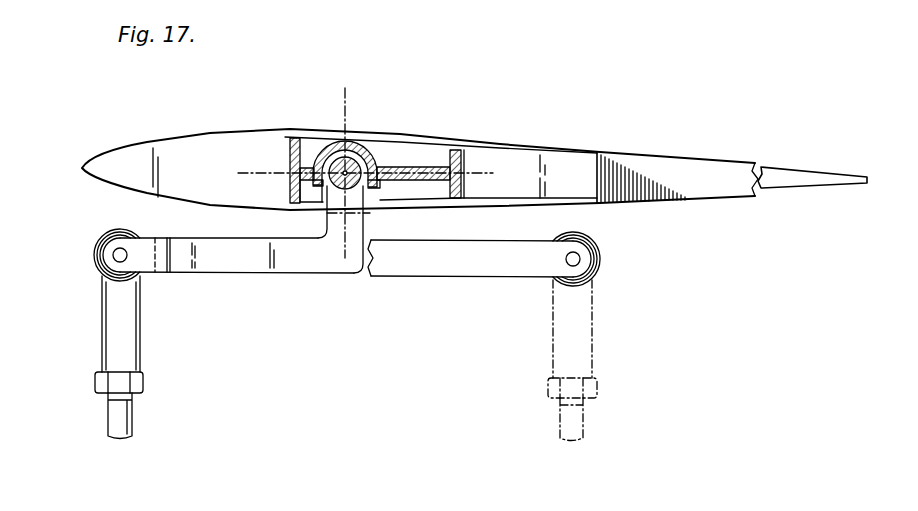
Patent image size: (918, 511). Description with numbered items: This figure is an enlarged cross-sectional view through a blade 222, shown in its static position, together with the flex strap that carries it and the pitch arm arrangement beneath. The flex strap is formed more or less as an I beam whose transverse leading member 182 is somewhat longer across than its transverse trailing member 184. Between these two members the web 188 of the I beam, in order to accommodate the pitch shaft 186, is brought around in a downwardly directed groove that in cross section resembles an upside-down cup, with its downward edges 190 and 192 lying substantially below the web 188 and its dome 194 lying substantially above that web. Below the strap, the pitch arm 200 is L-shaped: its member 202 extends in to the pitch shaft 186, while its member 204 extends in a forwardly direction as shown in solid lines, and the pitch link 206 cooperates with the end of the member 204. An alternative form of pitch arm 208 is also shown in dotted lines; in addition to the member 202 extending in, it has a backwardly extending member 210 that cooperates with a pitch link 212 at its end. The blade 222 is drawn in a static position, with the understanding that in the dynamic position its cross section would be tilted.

The transverse leading member 182 is at (288, 146).
The transverse trailing member 184 is at (462, 164).
The pitch shaft 186 is at (361, 143).
The web 188 is at (418, 163).
The downward edge 190 is at (323, 188).
The downward edge 192 is at (370, 188).
The dome 194 is at (333, 143).
The pitch arm 200 is at (325, 318).
The member 202 is at (338, 227).
The member 204 is at (220, 274).
The pitch link 206 is at (138, 362).
The pitch arm 208 is at (497, 318).
The backwardly extending member 210 is at (408, 278).
The pitch link 212 is at (594, 337).
The blade 222 is at (565, 147).